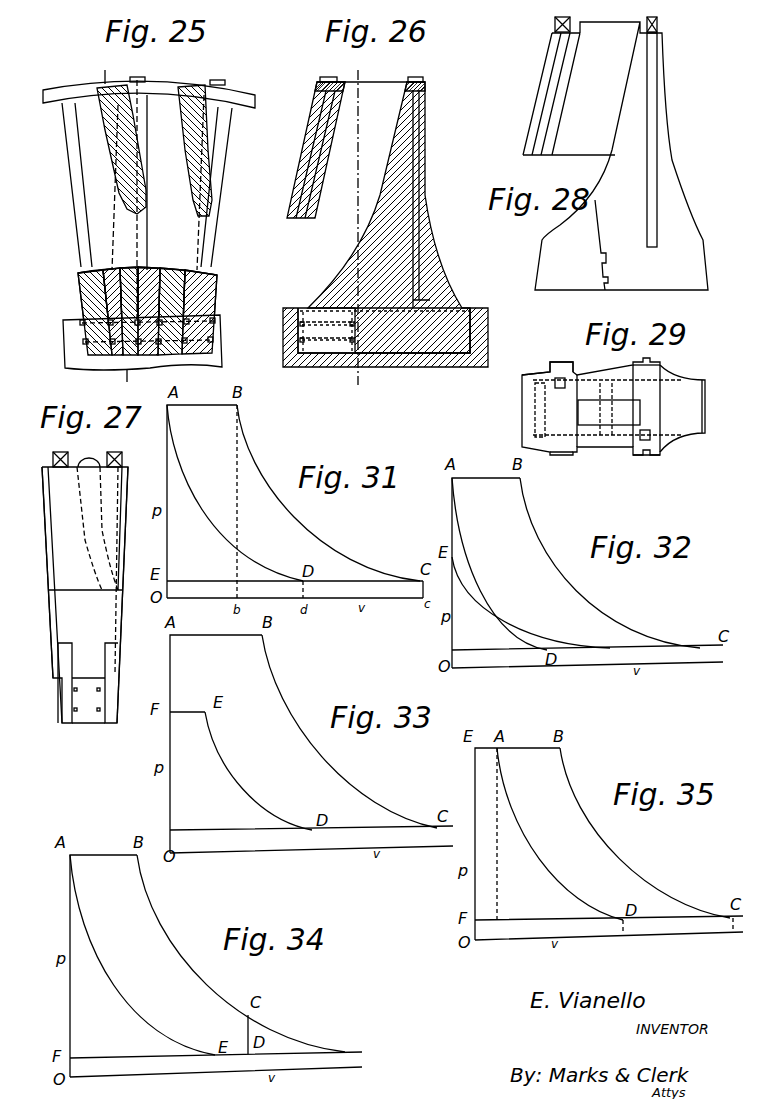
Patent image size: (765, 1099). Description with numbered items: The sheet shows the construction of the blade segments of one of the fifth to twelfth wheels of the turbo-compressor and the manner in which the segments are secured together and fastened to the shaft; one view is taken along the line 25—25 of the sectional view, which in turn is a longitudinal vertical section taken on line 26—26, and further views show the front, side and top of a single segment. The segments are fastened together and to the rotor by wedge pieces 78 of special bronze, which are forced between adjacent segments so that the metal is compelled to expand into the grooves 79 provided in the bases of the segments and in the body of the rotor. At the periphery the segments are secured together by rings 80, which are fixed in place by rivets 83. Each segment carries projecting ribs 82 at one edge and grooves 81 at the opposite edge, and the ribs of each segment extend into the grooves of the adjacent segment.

In FIG. 26, the section line 25— 25 is at (370, 226).
In FIG. 25, the section line 26— 26 is at (113, 227).
In FIG. 25, the wedge pieces 78 is at (78, 278).
In FIG. 26, the wedge pieces 78 is at (345, 292).
In FIG. 25, the grooves 79 is at (218, 325).
In FIG. 26, the grooves 79 is at (325, 340).
In FIG. 25, the rings 80 is at (246, 97).
In FIG. 26, the rings 80 is at (315, 88).
In FIG. 25, the grooves 81 is at (218, 170).
In FIG. 28, the grooves 81 is at (540, 123).
In FIG. 29, the grooves 81 is at (562, 452).
In FIG. 27, the grooves 81 is at (118, 618).
In FIG. 25, the projecting ribs 82 is at (73, 185).
In FIG. 29, the projecting ribs 82 is at (542, 367).
In FIG. 27, the projecting ribs 82 is at (52, 623).
In FIG. 26, the rivets 83 is at (320, 78).
In FIG. 28, the rivets 83 is at (555, 25).
In FIG. 27, the rivets 83 is at (53, 458).